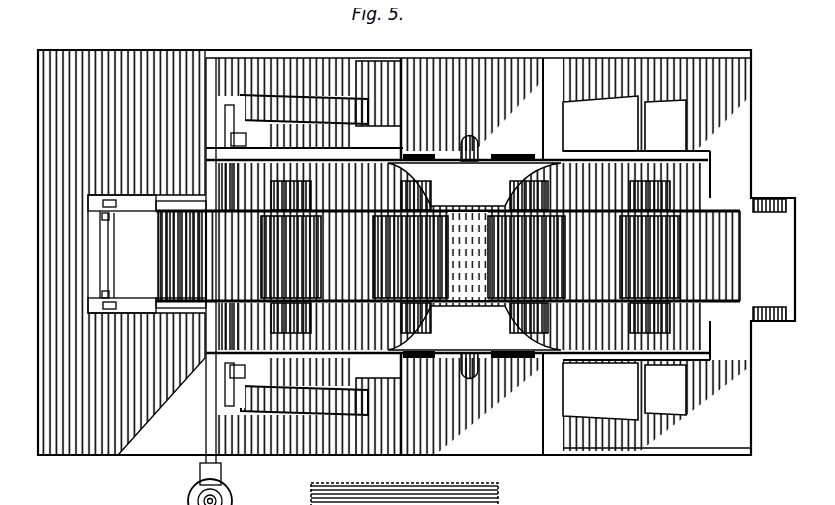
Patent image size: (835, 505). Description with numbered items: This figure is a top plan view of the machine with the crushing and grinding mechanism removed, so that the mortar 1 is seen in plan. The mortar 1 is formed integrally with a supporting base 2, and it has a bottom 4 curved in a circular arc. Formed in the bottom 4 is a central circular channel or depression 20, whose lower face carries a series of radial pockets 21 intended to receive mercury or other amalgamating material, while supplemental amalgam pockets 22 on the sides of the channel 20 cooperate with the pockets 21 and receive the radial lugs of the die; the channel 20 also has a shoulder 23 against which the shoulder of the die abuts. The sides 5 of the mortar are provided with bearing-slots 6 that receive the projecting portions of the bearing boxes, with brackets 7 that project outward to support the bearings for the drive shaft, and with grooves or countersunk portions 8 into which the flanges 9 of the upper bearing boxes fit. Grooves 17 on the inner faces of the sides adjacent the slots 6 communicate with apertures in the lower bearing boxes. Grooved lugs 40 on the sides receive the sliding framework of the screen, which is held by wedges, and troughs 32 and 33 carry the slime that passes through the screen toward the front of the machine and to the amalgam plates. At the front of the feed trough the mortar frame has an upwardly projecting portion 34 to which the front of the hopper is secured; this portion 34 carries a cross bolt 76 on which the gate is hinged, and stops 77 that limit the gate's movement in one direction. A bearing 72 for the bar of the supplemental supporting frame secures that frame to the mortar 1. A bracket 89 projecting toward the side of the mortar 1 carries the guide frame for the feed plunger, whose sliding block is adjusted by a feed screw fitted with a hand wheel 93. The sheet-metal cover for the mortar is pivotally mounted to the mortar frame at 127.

The mortar 1 is at (524, 50).
The supporting base 2 is at (284, 50).
The bottom 4 is at (468, 256).
The sides 5 is at (567, 150).
The bearing-slots 6 is at (455, 140).
The brackets 7 is at (482, 60).
The grooves or countersunk portions 8 is at (492, 153).
The flanges 9 is at (180, 493).
The grooves 17 is at (469, 147).
The central circular channel or depression 20 is at (448, 256).
The radial pockets 21 is at (470, 257).
The supplemental amalgam pockets 22 is at (393, 186).
The shoulder 23 is at (188, 293).
The trough 32 is at (625, 437).
The trough 33 is at (604, 62).
The upwardly projecting portion of the mortar frame 34 is at (143, 192).
The grooved lugs 40 is at (624, 258).
The bearing 72 is at (258, 130).
The cross bolt 76 is at (105, 265).
The stops 77 is at (100, 211).
The bracket 89 is at (208, 426).
The hand wheel 93 is at (224, 493).
The pivot of the cover 127 is at (762, 196).